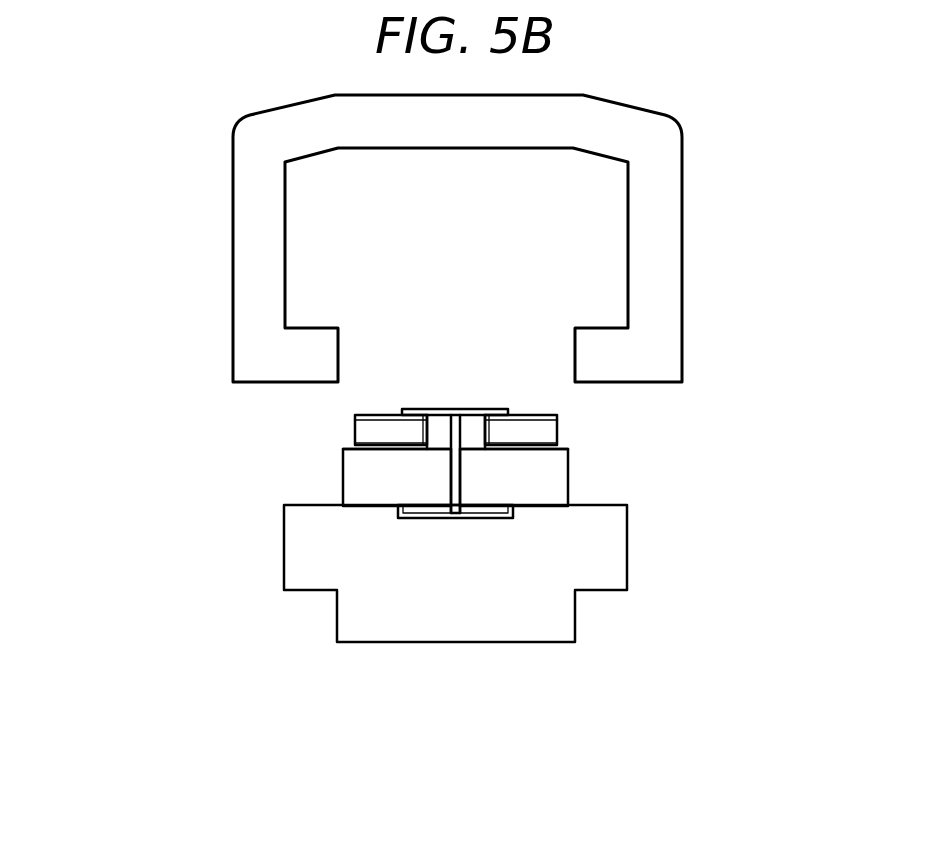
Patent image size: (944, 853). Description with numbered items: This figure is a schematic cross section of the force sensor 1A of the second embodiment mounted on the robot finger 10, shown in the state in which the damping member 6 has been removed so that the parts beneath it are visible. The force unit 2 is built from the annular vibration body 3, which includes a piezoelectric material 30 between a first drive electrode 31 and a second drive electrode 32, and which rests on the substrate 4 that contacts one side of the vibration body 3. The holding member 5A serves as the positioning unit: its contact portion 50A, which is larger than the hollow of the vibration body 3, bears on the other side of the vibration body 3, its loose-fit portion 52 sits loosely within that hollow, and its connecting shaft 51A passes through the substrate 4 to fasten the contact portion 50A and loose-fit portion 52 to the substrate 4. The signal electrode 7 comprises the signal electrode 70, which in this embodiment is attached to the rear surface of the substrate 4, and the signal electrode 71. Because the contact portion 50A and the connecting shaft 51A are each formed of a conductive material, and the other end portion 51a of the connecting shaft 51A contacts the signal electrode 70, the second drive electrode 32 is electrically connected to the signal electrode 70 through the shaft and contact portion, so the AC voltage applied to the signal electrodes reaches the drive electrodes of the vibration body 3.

The force sensor 1A is at (706, 373).
The force unit 2 is at (542, 392).
The vibration body 3 is at (328, 299).
The substrate 4 is at (558, 478).
The holding member 5A is at (523, 344).
The damping member 6 is at (663, 247).
The signal electrode 7 is at (232, 472).
The robot finger 10 is at (368, 628).
The piezoelectric material 30 is at (380, 433).
The first drive electrode 31 is at (366, 437).
The second drive electrode 32 is at (387, 416).
The contact portion 50A is at (483, 415).
The connecting shaft 51A is at (457, 438).
The another end portion 51a is at (480, 515).
The loose-fit portion 52 is at (442, 420).
The second signal electrode 70 is at (417, 513).
The second signal electrode 71 is at (372, 453).